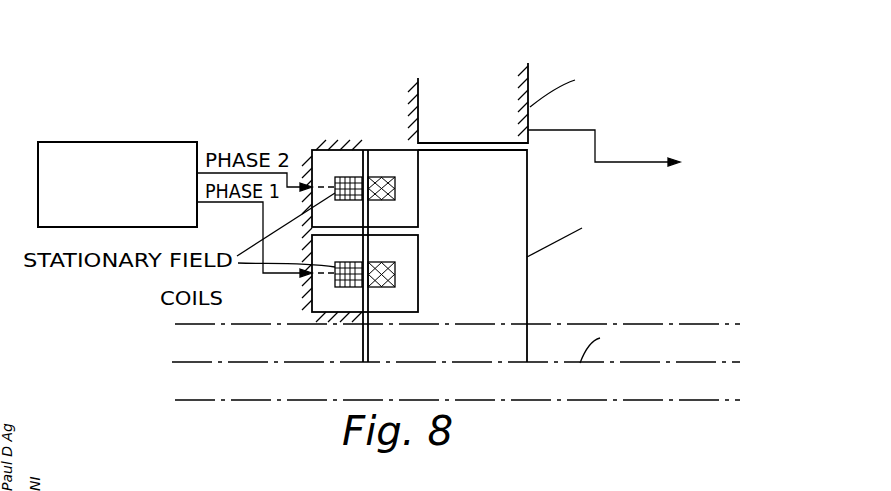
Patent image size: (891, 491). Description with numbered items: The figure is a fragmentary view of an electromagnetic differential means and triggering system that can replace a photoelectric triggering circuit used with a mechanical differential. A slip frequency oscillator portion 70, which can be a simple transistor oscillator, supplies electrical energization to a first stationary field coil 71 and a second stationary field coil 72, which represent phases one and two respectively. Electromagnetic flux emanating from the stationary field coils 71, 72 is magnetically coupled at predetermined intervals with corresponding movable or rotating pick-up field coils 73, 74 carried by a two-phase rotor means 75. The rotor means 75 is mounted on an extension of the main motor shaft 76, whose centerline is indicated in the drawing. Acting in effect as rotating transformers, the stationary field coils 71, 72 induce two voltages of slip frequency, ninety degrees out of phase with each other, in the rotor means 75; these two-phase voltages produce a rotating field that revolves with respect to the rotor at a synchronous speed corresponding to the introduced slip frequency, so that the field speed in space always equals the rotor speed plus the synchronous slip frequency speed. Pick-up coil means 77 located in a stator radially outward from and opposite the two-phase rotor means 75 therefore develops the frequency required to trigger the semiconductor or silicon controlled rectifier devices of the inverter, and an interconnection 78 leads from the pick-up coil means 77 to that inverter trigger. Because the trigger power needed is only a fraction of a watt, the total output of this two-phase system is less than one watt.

The slip frequency oscillator portion 70 is at (113, 142).
The first stationary field coil 71 is at (340, 287).
The second stationary field coil 72 is at (340, 177).
The movable pick-up field coil 73 is at (388, 268).
The movable pick-up field coil 74 is at (385, 189).
The two-phase rotor means 75 is at (505, 282).
The main motor shaft 76 is at (665, 325).
The pick-up coil means 77 is at (452, 135).
The interconnection 78 is at (617, 164).